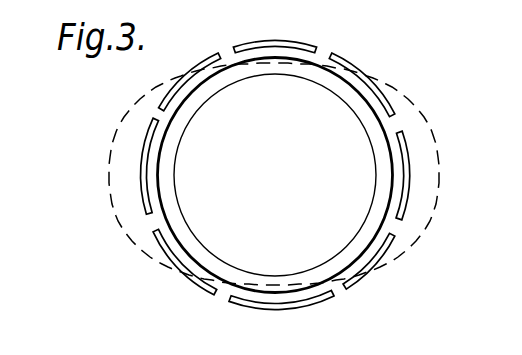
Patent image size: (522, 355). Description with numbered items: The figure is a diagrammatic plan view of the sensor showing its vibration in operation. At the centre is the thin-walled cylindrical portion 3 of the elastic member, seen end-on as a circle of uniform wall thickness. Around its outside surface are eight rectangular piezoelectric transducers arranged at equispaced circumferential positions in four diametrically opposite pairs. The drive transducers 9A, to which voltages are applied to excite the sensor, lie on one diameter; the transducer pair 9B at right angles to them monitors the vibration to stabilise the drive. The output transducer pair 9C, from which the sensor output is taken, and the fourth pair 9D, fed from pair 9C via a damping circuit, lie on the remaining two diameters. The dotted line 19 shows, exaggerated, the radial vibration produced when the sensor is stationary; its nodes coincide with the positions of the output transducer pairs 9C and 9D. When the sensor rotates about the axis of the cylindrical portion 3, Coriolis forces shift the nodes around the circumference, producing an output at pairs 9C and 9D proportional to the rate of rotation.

The cylindrical portion 3 is at (392, 174).
The dotted line 19 is at (127, 114).
The drive transducers 9A is at (142, 165).
The transducer pair 9B is at (292, 43).
The output transducer pair 9C is at (213, 68).
The output transducer pair 9D is at (353, 68).